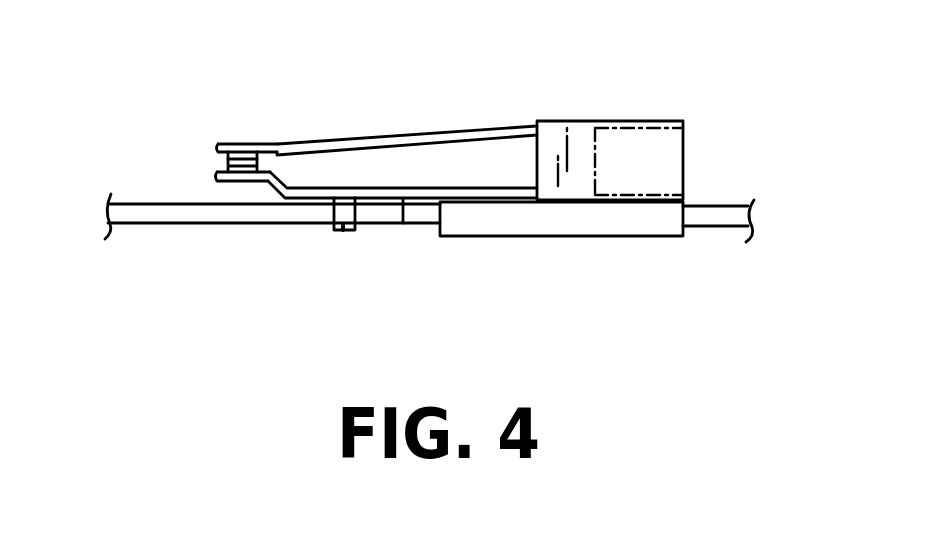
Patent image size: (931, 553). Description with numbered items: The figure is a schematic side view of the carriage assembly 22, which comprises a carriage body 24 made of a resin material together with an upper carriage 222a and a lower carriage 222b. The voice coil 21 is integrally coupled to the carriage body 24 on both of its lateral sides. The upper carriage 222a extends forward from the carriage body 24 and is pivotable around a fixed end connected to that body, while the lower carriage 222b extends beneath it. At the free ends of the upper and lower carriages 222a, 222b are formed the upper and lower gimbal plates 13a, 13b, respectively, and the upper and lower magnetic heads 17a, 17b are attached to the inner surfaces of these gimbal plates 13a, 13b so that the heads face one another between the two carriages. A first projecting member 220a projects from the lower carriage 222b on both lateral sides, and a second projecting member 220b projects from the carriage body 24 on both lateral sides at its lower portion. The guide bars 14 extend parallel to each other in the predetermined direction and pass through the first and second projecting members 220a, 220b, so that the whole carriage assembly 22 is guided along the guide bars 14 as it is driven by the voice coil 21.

The guide bars 14 is at (192, 215).
The upper gimbal plate 13a is at (249, 147).
The lower gimbal plate 13b is at (217, 177).
The upper magnetic head 17a is at (228, 160).
The lower magnetic head 17b is at (226, 167).
The upper carriage 222a is at (390, 137).
The lower carriage 222b is at (403, 227).
The first projecting member 220a is at (343, 232).
The second projecting member 220b is at (640, 218).
The carriage assembly 22 is at (543, 112).
The carriage body 24 is at (581, 152).
The voice coil 21 is at (655, 156).